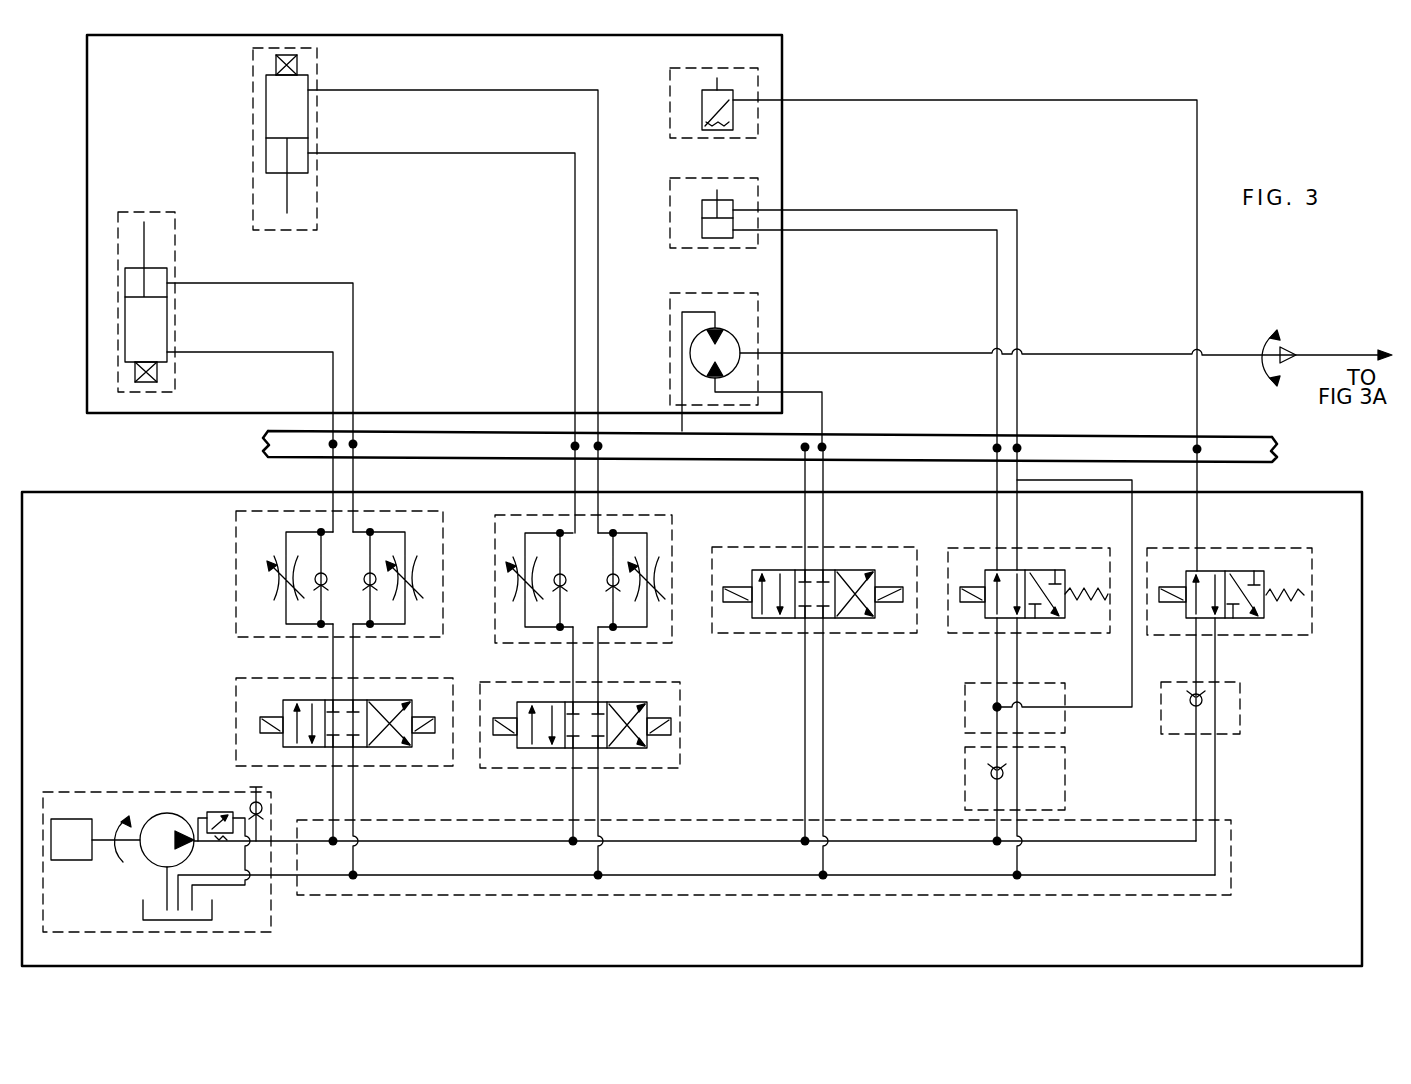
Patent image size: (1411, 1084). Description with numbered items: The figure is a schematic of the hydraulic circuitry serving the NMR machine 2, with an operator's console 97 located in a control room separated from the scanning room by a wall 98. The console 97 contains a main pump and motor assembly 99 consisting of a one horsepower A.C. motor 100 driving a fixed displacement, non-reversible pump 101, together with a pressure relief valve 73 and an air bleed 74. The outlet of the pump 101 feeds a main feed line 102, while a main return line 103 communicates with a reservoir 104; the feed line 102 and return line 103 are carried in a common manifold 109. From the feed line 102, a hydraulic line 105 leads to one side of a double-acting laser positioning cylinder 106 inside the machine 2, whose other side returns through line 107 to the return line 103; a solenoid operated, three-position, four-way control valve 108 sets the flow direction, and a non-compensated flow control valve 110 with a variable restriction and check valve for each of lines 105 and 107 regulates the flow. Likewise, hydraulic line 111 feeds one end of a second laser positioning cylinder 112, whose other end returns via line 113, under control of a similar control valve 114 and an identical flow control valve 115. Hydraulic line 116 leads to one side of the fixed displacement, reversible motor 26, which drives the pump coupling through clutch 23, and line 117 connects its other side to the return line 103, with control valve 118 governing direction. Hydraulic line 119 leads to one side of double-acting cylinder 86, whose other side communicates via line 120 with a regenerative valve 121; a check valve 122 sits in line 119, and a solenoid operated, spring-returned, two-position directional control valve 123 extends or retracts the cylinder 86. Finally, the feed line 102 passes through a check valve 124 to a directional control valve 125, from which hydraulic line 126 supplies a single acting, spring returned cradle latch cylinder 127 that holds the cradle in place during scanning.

The NMR machine 2 is at (782, 76).
The clutch 23 is at (1290, 350).
The hydraulic motor 26 is at (679, 294).
The pressure relief valve 73 is at (228, 810).
The air bleed 74 is at (263, 806).
The double-acting cylinder 86 is at (670, 193).
The operator's console 97 is at (1362, 780).
The wall 98 is at (1278, 449).
The main pump and motor assembly 99 is at (105, 792).
The A.C. motor 100 is at (72, 861).
The pump 101 is at (173, 813).
The main feed line 102 is at (510, 845).
The main return line 103 is at (706, 874).
The reservoir 104 is at (212, 907).
The hydraulic line 105 is at (300, 356).
The laser positioning cylinder 106 is at (176, 320).
The line 107 is at (355, 293).
The control valve 108 is at (236, 690).
The manifold 109 is at (414, 896).
The flow control valve 110 is at (236, 524).
The hydraulic line 111 is at (437, 166).
The second laser positioning cylinder 112 is at (253, 109).
The line 113 is at (598, 156).
The control valve 114 is at (680, 766).
The flow control valve 115 is at (672, 531).
The hydraulic line 116 is at (805, 713).
The line 117 is at (823, 672).
The control valve 118 is at (835, 547).
The hydraulic line 119 is at (997, 262).
The line 120 is at (1018, 273).
The regenerative valve 121 is at (965, 702).
The check valve 122 is at (1065, 791).
The directional control valve 123 is at (1074, 548).
The check valve 124 is at (1240, 709).
The directional control valve 125 is at (1283, 548).
The hydraulic line 126 is at (1198, 262).
The cradle latch cylinder 127 is at (670, 78).